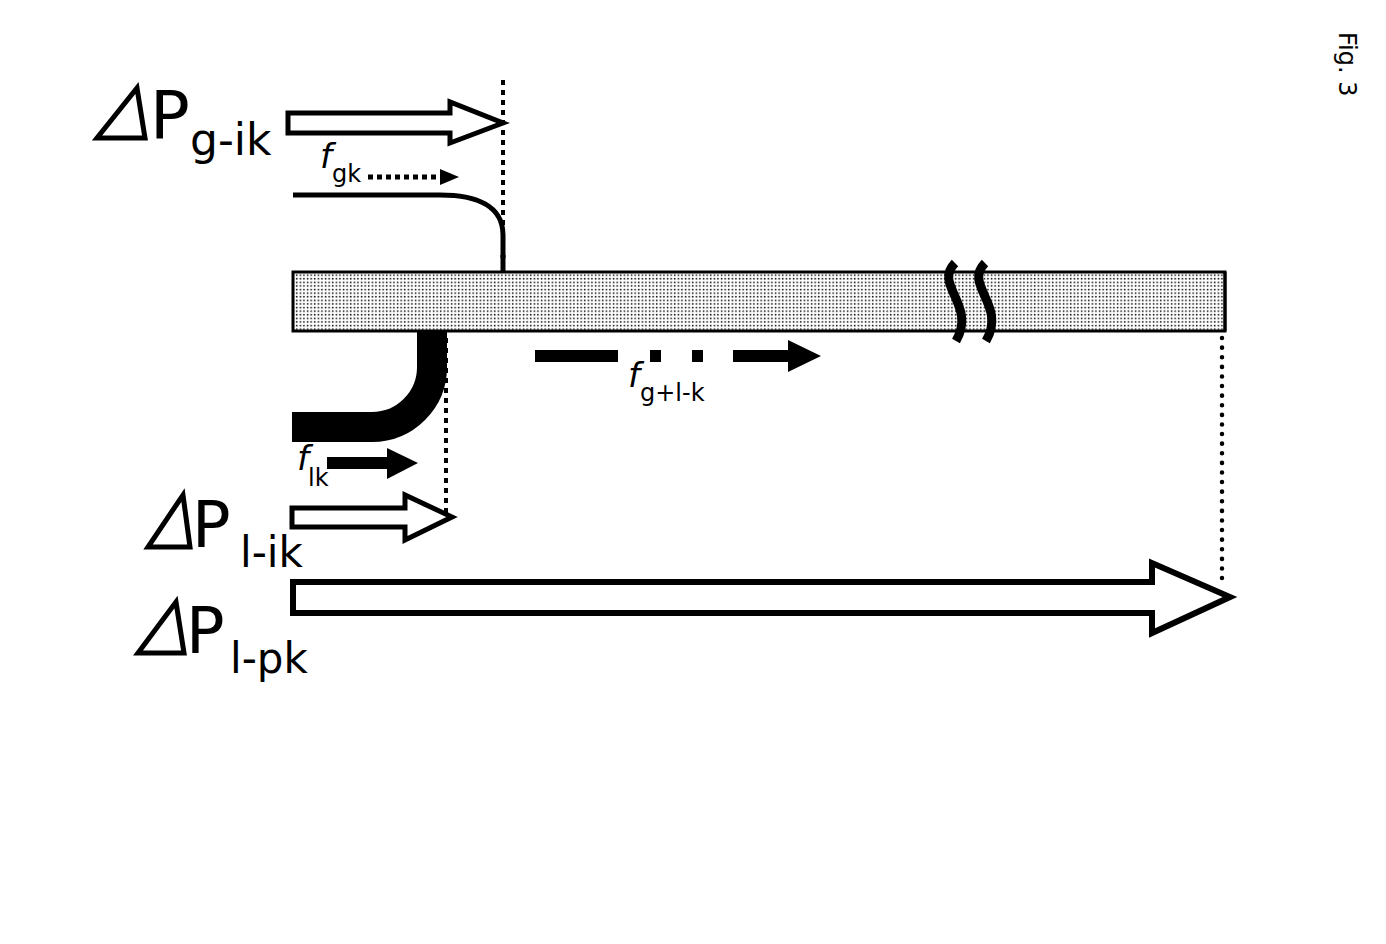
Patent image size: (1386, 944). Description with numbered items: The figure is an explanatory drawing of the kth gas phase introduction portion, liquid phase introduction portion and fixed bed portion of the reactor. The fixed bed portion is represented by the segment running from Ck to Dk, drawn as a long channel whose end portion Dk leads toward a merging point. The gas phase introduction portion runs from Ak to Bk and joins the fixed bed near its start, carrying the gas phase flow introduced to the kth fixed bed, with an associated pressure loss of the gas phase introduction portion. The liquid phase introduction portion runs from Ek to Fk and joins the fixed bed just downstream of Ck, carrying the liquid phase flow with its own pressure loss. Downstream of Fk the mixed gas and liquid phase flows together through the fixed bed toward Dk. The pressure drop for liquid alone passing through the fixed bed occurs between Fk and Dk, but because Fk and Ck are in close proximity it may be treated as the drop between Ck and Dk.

The gas phase introduction portion start point Ak is at (370, 214).
The gas phase introduction portion end point Bk is at (534, 176).
The fixed bed portion start point Ck is at (732, 302).
The fixed bed portion end point Dk is at (1254, 428).
The liquid phase introduction portion start point Ek is at (335, 393).
The liquid phase introduction portion end point Fk is at (457, 426).